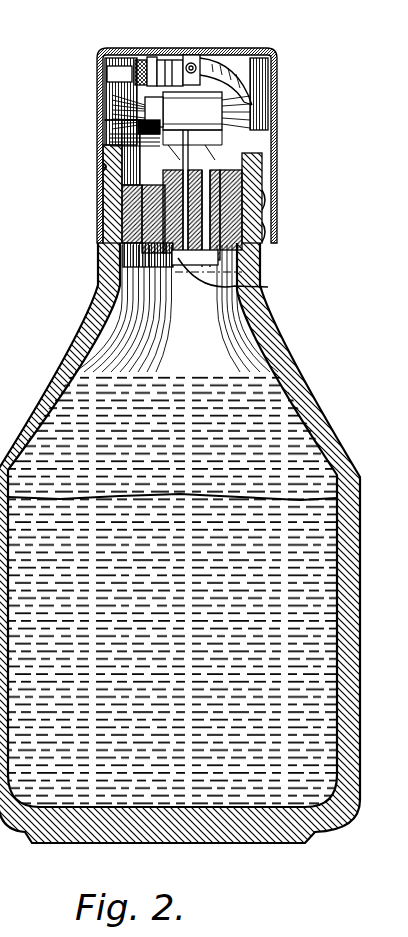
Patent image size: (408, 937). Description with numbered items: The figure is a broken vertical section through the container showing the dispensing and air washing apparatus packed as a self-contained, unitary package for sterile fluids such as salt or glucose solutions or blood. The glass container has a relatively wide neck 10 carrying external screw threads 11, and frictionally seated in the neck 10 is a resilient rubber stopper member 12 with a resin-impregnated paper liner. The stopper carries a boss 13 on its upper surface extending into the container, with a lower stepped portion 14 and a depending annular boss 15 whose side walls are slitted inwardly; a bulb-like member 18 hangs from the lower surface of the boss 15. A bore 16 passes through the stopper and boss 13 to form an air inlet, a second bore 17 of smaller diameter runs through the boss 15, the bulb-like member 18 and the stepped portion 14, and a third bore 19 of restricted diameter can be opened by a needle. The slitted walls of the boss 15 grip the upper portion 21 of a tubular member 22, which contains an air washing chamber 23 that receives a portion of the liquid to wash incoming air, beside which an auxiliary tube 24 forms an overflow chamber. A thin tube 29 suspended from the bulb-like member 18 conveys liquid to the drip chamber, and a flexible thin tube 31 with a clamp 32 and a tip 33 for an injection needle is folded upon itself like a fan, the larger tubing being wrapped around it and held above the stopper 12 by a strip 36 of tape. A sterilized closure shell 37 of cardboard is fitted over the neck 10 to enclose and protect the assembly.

The neck 10 is at (100, 265).
The external screw threads 11 is at (100, 212).
The stopper member 12 is at (268, 232).
The boss 13 is at (222, 258).
The lower stepped portion 14 is at (267, 288).
The depending annular boss 15 is at (215, 172).
The bore 16 is at (245, 190).
The second bore 17 is at (273, 208).
The bulb-like member 18 is at (222, 153).
The third bore 19 is at (100, 222).
The upper portion of tubular member 21 is at (105, 185).
The tubular member 22 is at (150, 138).
The air washing chamber 23 is at (147, 125).
The auxiliary tube 24 is at (147, 107).
The thin tube 29 is at (240, 138).
The thin tube 31 is at (225, 118).
The clamp 32 is at (200, 57).
The tip 33 is at (140, 52).
The strip of tape 36 is at (171, 55).
The closure shell 37 is at (98, 63).